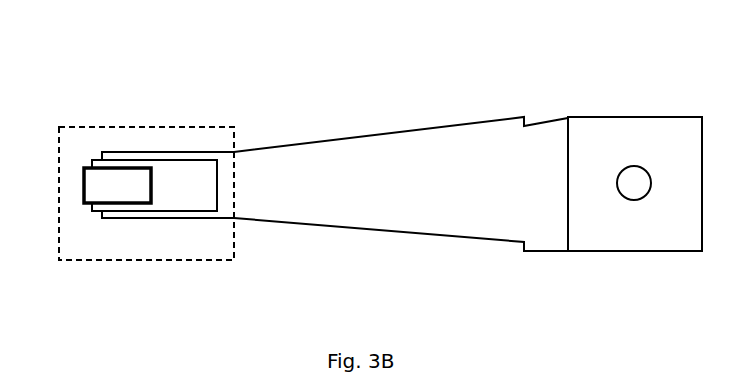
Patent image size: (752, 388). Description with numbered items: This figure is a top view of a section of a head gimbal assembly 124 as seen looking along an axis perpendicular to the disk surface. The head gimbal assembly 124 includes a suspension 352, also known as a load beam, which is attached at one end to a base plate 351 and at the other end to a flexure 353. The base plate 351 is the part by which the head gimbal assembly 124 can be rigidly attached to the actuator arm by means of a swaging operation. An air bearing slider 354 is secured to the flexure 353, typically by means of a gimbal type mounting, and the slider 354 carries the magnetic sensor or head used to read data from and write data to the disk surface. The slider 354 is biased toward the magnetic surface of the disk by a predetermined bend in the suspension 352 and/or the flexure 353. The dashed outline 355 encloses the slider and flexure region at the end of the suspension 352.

The head gimbal assembly 124 is at (168, 28).
The base plate 351 is at (633, 142).
The suspension 352 is at (358, 167).
The flexure 353 is at (184, 185).
The air bearing slider 354 is at (118, 184).
The detail region 355 is at (147, 260).